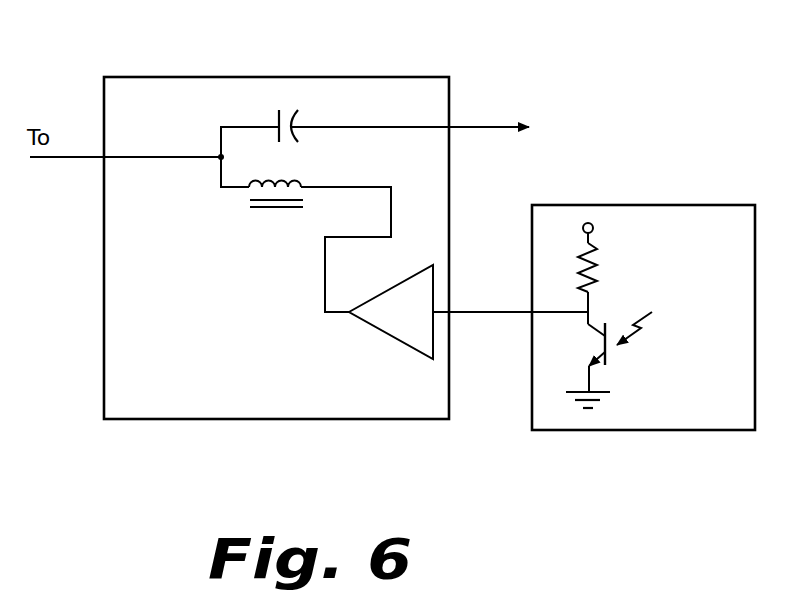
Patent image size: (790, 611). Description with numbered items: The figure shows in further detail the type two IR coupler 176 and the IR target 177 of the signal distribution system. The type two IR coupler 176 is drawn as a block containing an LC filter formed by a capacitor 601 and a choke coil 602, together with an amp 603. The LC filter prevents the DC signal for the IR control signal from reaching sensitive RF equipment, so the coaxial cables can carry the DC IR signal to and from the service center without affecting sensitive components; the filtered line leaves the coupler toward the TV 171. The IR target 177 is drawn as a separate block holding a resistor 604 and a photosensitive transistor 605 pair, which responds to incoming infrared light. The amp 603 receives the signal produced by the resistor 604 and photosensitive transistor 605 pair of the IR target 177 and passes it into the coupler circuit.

The type 2 IR coupler 176 is at (333, 77).
The IR target 177 is at (628, 432).
The TV 171 is at (465, 126).
The capacitor 601 is at (292, 130).
The choke coil 602 is at (282, 210).
The amp 603 is at (365, 322).
The resistor 604 is at (582, 282).
The photosensitive transistor 605 is at (584, 369).